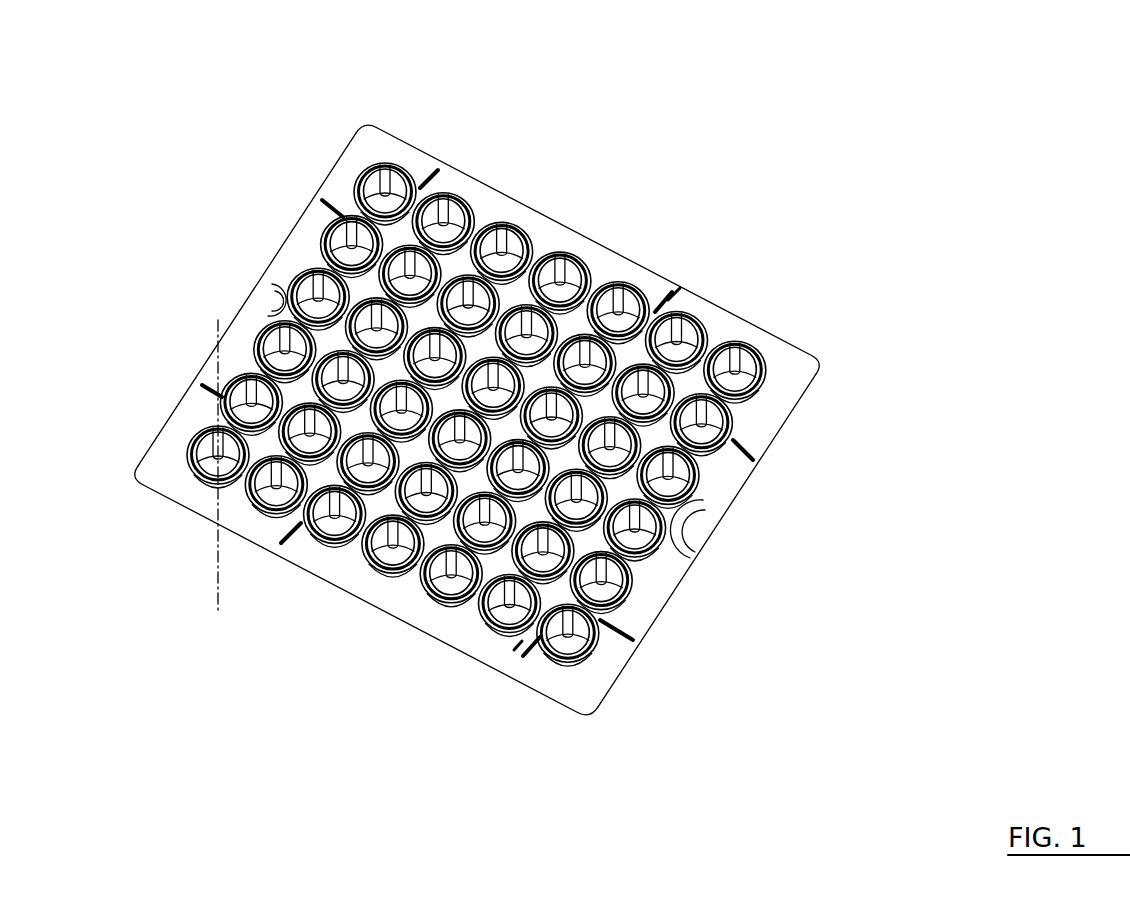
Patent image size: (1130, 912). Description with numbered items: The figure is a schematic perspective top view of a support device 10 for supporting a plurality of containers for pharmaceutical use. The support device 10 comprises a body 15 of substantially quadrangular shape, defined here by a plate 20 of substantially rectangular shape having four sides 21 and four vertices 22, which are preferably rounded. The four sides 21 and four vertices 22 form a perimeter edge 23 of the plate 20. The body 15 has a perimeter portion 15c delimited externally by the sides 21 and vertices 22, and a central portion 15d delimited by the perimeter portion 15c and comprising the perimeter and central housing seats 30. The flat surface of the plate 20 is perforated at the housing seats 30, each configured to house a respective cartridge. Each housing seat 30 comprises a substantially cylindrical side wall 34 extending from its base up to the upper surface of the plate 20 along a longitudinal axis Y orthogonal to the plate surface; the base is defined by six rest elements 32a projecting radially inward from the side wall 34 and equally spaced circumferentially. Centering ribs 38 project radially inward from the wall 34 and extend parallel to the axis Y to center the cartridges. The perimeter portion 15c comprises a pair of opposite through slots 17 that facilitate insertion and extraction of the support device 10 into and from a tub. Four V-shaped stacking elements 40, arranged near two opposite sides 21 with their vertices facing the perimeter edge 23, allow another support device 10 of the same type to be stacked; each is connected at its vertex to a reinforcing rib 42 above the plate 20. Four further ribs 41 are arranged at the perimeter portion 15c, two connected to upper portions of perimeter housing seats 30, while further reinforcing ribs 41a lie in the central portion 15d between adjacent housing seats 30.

The support device 10 is at (757, 138).
The body 15 is at (645, 241).
The perimeter portion 15c is at (490, 205).
The central portion 15d is at (534, 174).
The through slots 17 is at (250, 300).
The plate 20 is at (748, 316).
The sides 21 is at (279, 250).
The vertices 22 is at (364, 128).
The perimeter edge 23 is at (413, 632).
The housing seats 30 is at (552, 262).
The rest elements 32a is at (452, 612).
The side wall 34 is at (567, 660).
The centering ribs 38 is at (395, 548).
The stacking elements 40 is at (427, 184).
The further ribs 41 is at (330, 187).
The further reinforcing ribs 41a is at (690, 315).
The reinforcing rib 42 is at (522, 645).
The longitudinal axis Y is at (218, 595).